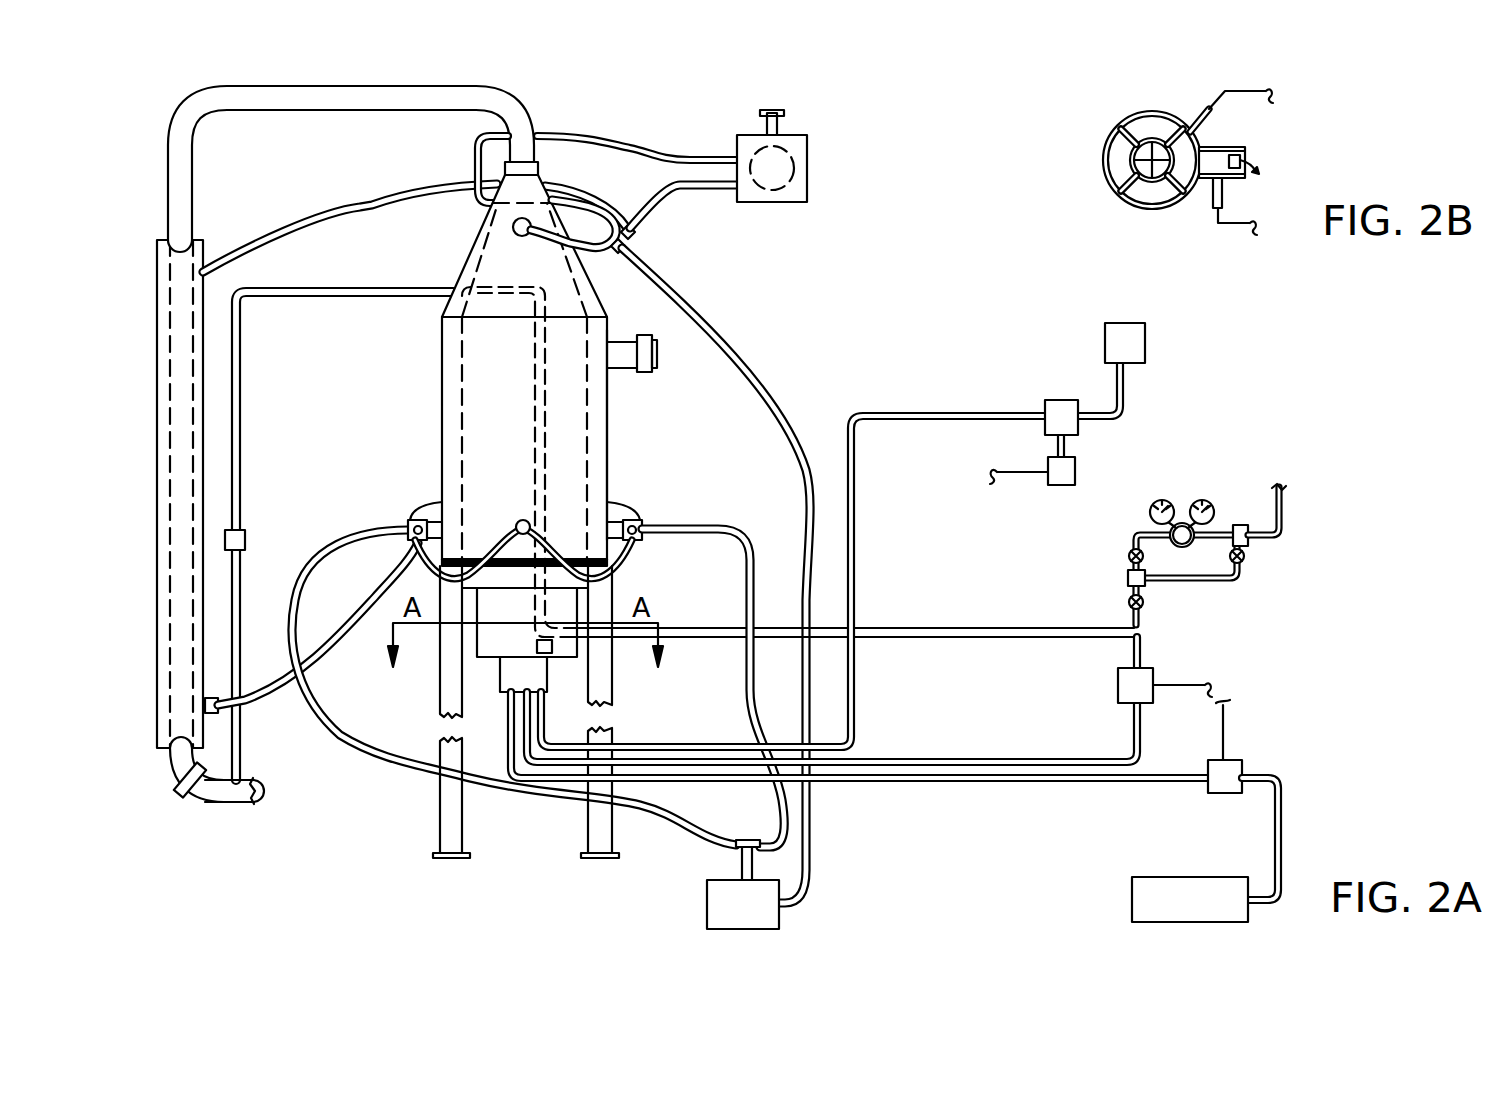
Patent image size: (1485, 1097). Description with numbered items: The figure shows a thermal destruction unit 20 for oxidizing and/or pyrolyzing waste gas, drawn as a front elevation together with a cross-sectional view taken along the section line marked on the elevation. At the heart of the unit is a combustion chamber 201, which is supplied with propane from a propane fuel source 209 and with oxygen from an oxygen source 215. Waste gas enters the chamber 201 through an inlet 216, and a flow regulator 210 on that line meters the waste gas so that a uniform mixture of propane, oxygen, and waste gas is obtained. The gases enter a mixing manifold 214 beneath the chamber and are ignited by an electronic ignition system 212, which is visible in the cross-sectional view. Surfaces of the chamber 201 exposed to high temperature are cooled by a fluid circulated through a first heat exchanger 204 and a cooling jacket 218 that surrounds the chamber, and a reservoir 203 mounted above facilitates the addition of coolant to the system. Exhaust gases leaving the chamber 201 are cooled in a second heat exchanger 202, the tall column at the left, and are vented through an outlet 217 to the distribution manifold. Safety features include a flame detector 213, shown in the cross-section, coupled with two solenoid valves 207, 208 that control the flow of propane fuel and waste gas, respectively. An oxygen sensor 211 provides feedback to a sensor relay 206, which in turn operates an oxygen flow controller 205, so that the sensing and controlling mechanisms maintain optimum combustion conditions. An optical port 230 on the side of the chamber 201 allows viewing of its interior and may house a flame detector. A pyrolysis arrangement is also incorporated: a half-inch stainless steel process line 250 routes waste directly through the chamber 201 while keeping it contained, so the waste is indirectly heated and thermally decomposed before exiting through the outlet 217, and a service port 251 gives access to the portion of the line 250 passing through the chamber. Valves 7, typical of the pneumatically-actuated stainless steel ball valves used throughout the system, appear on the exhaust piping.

In FIG. 2A, the thermal destruction unit 20 is at (541, 321).
In FIG. 2A, the valve 7 is at (247, 538).
In FIG. 2A, the combustion chamber 201 is at (460, 438).
In FIG. 2A, the second heat exchanger 202 is at (205, 418).
In FIG. 2A, the reservoir 203 is at (770, 203).
In FIG. 2A, the first heat exchanger 204 is at (720, 903).
In FIG. 2A, the oxygen flow controller 205 is at (1057, 400).
In FIG. 2A, the sensor relay 206 is at (1058, 487).
In FIG. 2A, the solenoid valve 207 is at (1230, 768).
In FIG. 2A, the solenoid valve 208 is at (1118, 689).
In FIG. 2A, the propane fuel source 209 is at (1175, 888).
In FIG. 2A, the flow regulator 210 is at (1168, 498).
In FIG. 2B, the oxygen sensor 211 is at (1198, 122).
In FIG. 2B, the electronic ignition system 212 is at (1242, 156).
In FIG. 2B, the flame detector 213 is at (1213, 197).
In FIG. 2A, the mixing manifold 214 is at (488, 643).
In FIG. 2B, the mixing manifold 214 is at (1103, 152).
In FIG. 2A, the oxygen source 215 is at (1146, 352).
In FIG. 2A, the inlet 216 is at (1283, 487).
In FIG. 2A, the outlet 217 is at (253, 792).
In FIG. 2A, the cooling jacket 218 is at (600, 450).
In FIG. 2A, the optical port 230 is at (640, 372).
In FIG. 2A, the process line 250 is at (527, 410).
In FIG. 2A, the service port 251 is at (550, 652).